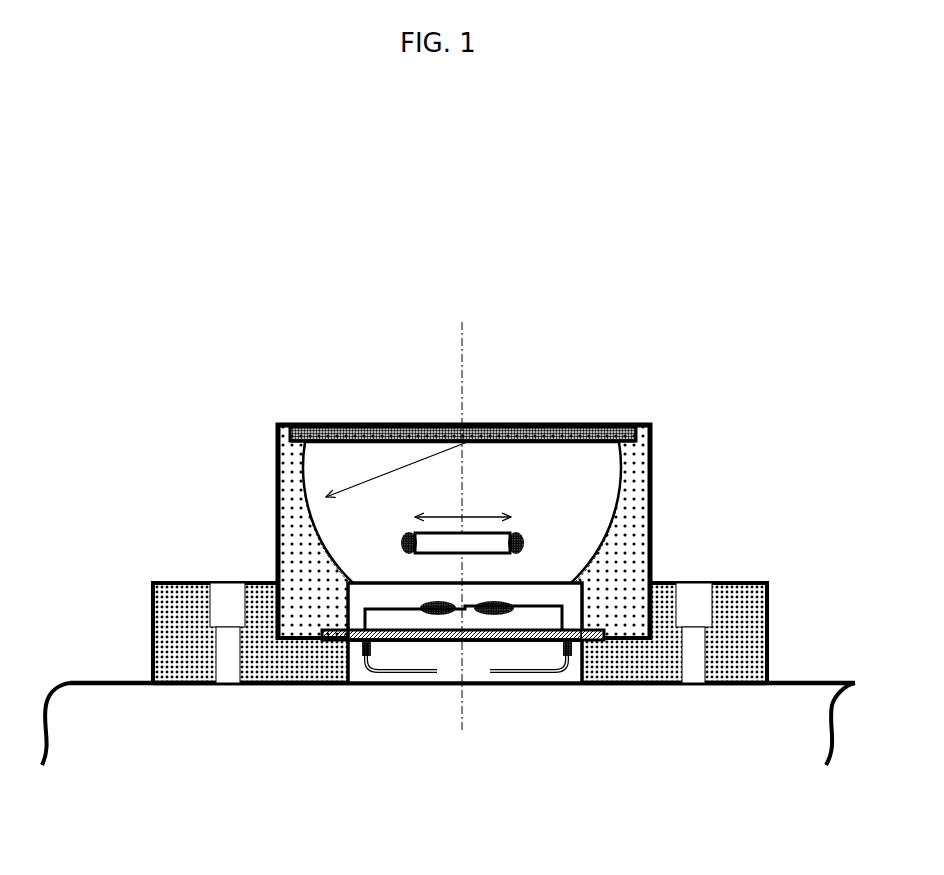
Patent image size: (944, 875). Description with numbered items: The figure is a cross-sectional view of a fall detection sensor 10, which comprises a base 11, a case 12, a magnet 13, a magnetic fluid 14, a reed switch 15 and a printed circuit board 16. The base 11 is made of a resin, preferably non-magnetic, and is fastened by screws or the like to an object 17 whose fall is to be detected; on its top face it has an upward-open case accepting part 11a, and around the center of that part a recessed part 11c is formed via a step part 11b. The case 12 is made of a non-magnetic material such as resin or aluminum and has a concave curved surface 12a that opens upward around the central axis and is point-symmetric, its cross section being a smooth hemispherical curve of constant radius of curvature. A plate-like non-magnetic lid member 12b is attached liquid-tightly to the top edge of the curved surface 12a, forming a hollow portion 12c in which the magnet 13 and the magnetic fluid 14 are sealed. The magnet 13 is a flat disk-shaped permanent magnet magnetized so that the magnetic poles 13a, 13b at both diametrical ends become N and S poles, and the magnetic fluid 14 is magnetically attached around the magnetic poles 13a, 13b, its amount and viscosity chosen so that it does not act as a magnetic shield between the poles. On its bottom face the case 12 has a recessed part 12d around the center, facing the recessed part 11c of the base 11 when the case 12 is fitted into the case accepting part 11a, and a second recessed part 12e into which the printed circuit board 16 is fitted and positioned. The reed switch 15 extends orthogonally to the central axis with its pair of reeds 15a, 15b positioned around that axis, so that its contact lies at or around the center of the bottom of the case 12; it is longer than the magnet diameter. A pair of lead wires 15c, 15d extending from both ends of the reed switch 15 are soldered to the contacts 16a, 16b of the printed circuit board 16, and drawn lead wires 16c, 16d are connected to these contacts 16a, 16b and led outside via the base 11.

The fall detection sensor 10 is at (597, 317).
The base 11 is at (740, 580).
The case accepting part 11a is at (293, 588).
The step part 11b is at (287, 684).
The recessed part 11c is at (356, 683).
The case 12 is at (450, 544).
The curved surface 12a is at (318, 468).
The lid member 12b is at (598, 424).
The hollow portion 12c is at (484, 452).
The recessed part 12d is at (583, 604).
The second recessed part 12e is at (590, 643).
The magnet 13 is at (478, 515).
The magnetic pole 13a is at (412, 530).
The magnetic pole 13b is at (518, 528).
The magnetic fluid 14 is at (462, 498).
The reed switch 15 is at (460, 678).
The reed 15a is at (460, 612).
The reed 15b is at (465, 612).
The lead wire 15c is at (420, 612).
The lead wire 15d is at (507, 608).
The printed circuit board 16 is at (474, 699).
The contact 16a is at (363, 660).
The contact 16b is at (567, 650).
The lead wire 16c is at (393, 673).
The lead wire 16d is at (528, 650).
The object 17 is at (803, 681).